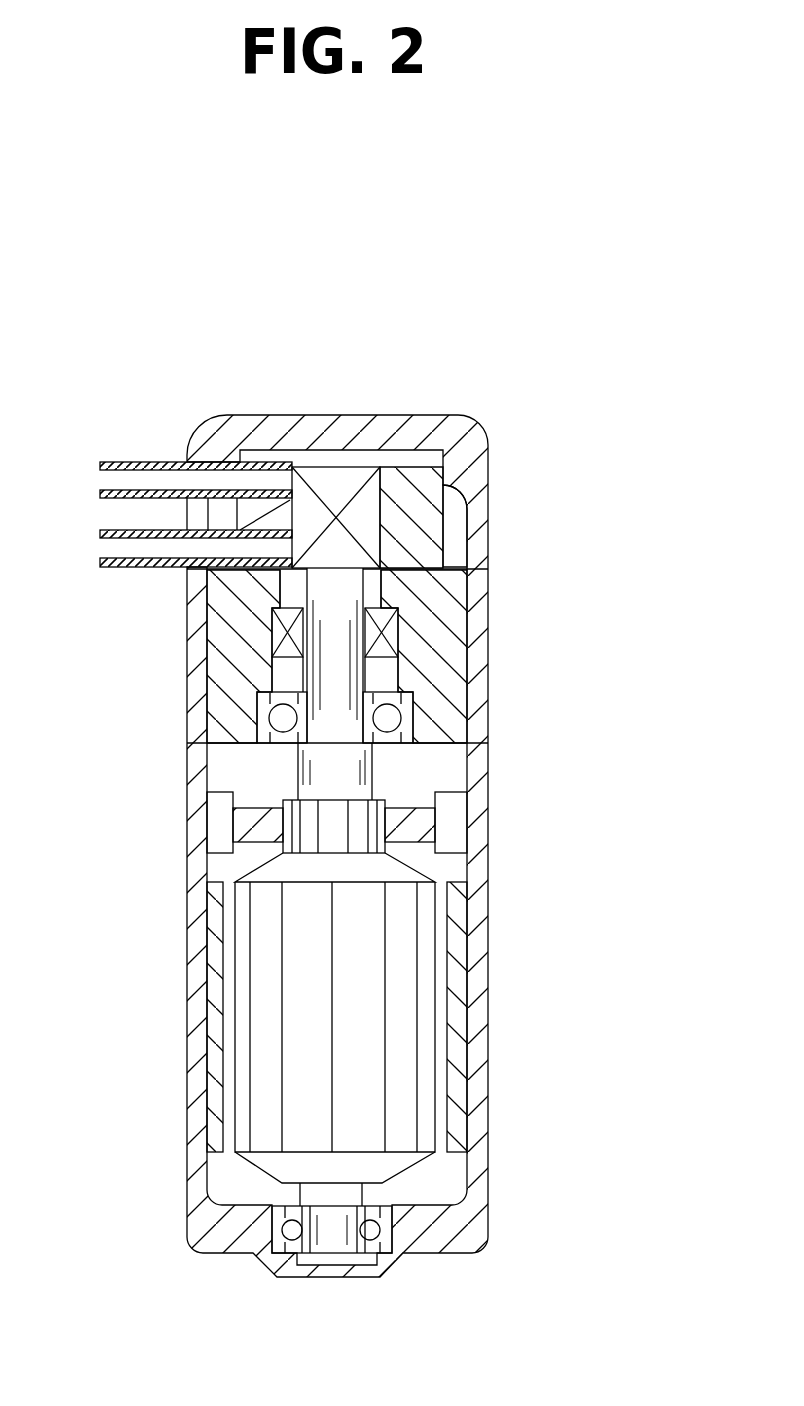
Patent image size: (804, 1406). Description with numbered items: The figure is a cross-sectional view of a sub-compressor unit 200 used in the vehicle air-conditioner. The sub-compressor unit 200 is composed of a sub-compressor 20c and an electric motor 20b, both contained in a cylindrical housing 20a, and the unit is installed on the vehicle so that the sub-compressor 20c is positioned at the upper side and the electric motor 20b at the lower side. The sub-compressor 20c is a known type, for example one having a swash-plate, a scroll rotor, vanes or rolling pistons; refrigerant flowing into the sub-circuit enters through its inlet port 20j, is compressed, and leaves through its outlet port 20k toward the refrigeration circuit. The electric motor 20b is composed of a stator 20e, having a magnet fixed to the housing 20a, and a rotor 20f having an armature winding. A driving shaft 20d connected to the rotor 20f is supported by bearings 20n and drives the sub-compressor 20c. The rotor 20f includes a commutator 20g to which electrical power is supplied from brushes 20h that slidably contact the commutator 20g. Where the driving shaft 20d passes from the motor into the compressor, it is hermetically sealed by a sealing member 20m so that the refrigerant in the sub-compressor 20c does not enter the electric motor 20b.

The sub-compressor unit 200 is at (308, 375).
The cylindrical housing 20a is at (478, 1052).
The electric motor 20b is at (303, 1117).
The sub-compressor 20c is at (347, 478).
The driving shaft 20d is at (340, 600).
The stator 20e is at (457, 988).
The rotor 20f is at (360, 1100).
The commutator 20g is at (332, 842).
The brushes 20h is at (407, 817).
The inlet port 20j is at (137, 473).
The outlet port 20k is at (127, 556).
The sealing member 20m is at (390, 632).
The bearings 20n is at (390, 720).